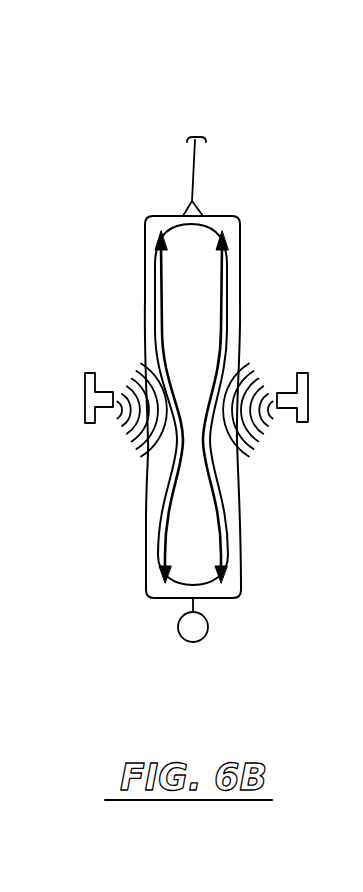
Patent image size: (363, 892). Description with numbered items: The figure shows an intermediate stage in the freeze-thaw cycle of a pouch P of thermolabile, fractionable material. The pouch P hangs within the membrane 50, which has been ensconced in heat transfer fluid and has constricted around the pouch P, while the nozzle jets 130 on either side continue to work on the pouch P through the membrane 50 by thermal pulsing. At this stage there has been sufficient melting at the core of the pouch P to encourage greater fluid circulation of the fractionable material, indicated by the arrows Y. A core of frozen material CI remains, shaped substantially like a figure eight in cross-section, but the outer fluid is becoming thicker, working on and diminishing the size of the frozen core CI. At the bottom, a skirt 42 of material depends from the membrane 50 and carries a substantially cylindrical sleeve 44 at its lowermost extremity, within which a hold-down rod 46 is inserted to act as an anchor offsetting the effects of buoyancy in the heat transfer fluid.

The pouch P is at (236, 224).
The membrane 50 is at (202, 204).
The arrows Y is at (157, 272).
The core of material CI is at (208, 326).
The nozzle jets 130 is at (90, 423).
The skirt 42 is at (197, 604).
The sleeve 44 is at (200, 640).
The hold-down rod 46 is at (187, 627).